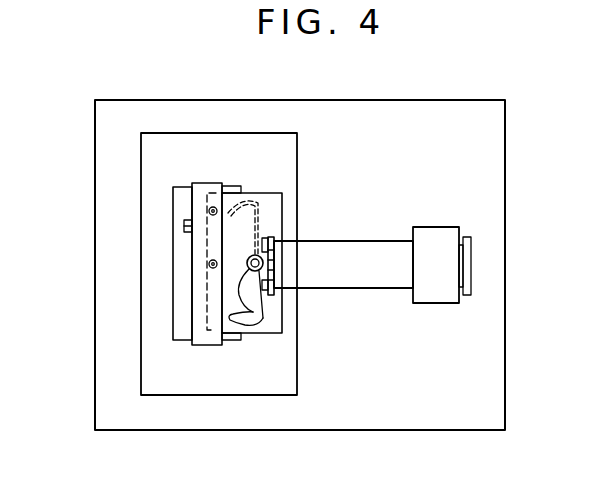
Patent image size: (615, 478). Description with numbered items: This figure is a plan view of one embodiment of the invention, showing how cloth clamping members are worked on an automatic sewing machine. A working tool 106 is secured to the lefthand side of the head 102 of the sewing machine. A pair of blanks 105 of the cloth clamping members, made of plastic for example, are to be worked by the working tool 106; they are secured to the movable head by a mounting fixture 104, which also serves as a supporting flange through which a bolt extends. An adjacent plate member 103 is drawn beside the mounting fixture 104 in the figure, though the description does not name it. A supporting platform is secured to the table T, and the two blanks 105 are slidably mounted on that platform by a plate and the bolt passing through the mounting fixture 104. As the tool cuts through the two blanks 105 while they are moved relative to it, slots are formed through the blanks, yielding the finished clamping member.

The table T is at (493, 127).
The head 102 is at (443, 227).
The mounting plate 103 is at (173, 266).
The mounting fixture 104 is at (205, 345).
The blank of cloth clamping member 105 is at (282, 218).
The working tool 106 is at (265, 317).